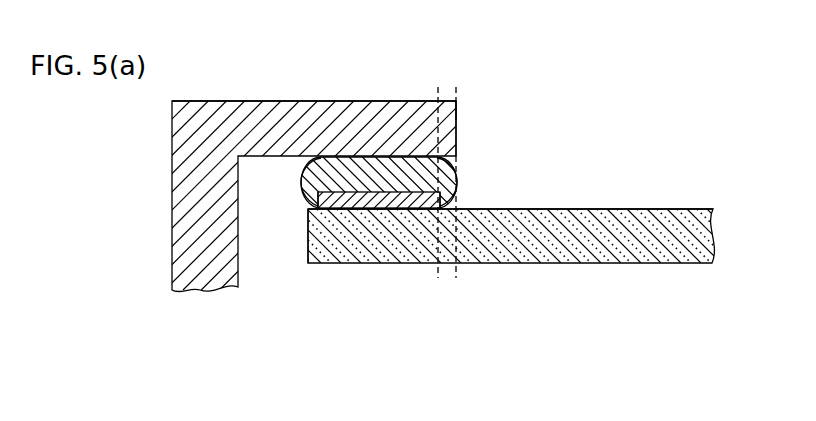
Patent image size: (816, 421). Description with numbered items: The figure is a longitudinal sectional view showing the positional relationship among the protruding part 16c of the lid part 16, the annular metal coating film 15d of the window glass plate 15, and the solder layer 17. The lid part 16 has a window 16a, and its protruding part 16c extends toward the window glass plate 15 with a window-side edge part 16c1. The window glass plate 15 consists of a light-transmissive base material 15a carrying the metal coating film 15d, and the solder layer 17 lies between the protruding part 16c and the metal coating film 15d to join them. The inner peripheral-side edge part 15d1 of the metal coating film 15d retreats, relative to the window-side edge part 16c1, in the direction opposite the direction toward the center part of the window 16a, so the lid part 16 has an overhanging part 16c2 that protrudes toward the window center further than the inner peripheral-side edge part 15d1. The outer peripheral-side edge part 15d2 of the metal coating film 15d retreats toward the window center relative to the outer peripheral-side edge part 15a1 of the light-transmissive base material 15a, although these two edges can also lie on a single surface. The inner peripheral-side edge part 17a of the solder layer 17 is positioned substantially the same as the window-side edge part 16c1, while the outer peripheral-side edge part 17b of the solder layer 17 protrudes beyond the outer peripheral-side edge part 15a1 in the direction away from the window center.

The window glass plate 15 is at (630, 266).
The light-transmissive base material 15a is at (640, 210).
The outer peripheral-side edge part of the light-transmissive base material 15a1 is at (310, 247).
The annular metal coating film 15d is at (380, 200).
The inner peripheral-side edge part of the metal coating film 15d1 is at (446, 208).
The outer peripheral-side edge part of the metal coating film 15d2 is at (304, 199).
The lid part 16 is at (201, 99).
The window 16a is at (458, 140).
The protruding part 16c is at (258, 101).
The window-side edge part of the protruding part 16c1 is at (457, 104).
The overhanging part 16c2 is at (443, 100).
The solder layer 17 is at (380, 170).
The inner peripheral-side edge part of the solder layer 17a is at (458, 170).
The outer peripheral-side edge part of the solder layer 17b is at (303, 174).